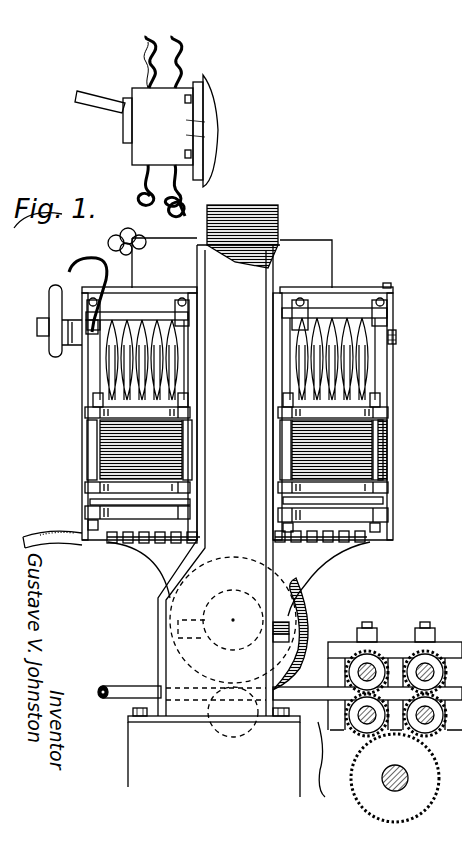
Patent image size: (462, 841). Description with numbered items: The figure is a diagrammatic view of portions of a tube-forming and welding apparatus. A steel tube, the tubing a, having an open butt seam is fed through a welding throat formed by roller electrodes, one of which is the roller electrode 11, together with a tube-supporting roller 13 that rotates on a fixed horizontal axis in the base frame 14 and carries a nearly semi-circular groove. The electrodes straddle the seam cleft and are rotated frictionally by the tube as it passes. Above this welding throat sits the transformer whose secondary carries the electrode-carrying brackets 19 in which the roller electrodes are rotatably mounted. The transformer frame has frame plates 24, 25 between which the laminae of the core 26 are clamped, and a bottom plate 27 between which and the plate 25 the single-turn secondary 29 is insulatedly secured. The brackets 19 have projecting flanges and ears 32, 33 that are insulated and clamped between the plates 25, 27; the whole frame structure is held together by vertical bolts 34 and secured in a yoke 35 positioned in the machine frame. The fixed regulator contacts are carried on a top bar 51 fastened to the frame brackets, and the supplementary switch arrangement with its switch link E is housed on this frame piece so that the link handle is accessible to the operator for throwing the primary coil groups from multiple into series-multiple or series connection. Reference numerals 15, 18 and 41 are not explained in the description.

The roller electrode 11 is at (308, 618).
The tube-supporting roller 13 is at (220, 738).
The base frame 14 is at (127, 758).
The standard 15 is at (157, 643).
The field magnet assembly 18 is at (417, 405).
The electrode-carrying bracket 19 is at (315, 557).
The frame plate 24 is at (100, 430).
The frame plate 25 is at (88, 489).
The core 26 is at (115, 446).
The bottom plate 27 is at (88, 508).
The single-turn secondary 29 is at (365, 492).
The projecting flange 32 is at (322, 497).
The ear 33 is at (367, 694).
The vertical bolt 34 is at (98, 442).
The yoke 35 is at (283, 247).
The handle 41 is at (47, 300).
The top bar 51 is at (390, 289).
The switch link E is at (84, 263).
The tubing a is at (126, 675).